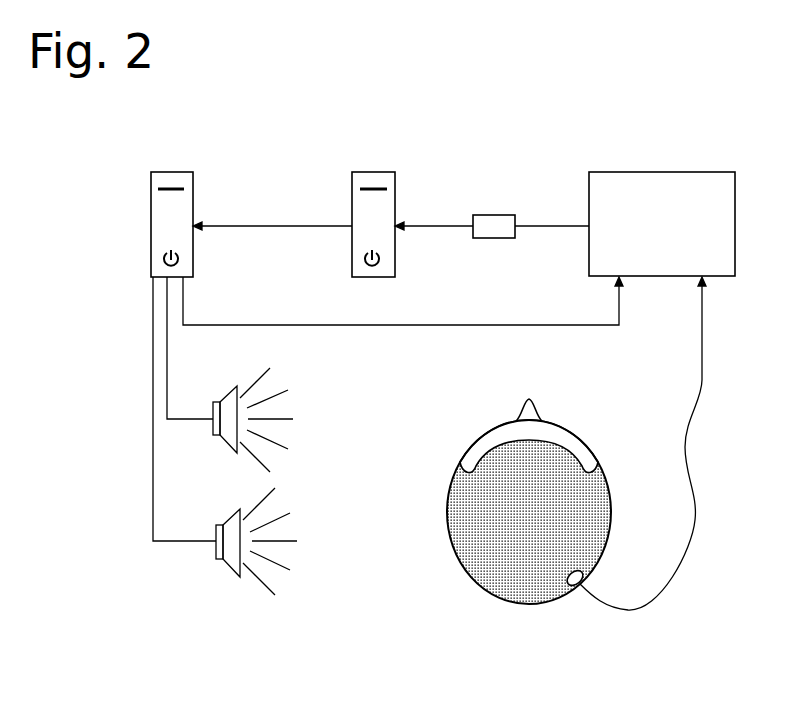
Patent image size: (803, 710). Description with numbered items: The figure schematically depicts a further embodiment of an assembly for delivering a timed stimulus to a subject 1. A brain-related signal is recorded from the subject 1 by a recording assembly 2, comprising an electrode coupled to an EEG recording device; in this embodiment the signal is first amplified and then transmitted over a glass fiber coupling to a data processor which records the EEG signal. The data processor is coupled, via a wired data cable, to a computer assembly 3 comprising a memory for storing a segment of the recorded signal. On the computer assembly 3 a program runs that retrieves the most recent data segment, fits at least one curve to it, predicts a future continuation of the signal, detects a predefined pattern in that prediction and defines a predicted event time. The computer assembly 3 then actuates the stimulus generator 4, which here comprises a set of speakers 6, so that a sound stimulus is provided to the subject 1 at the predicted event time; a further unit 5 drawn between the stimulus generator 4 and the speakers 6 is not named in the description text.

The head of user / patient 1 is at (460, 432).
The processing unit 2 is at (715, 195).
The transmitter module 3 is at (486, 220).
The receiver unit 4 is at (371, 180).
The audio control unit 5 is at (176, 180).
The loudspeakers 6 is at (214, 436).